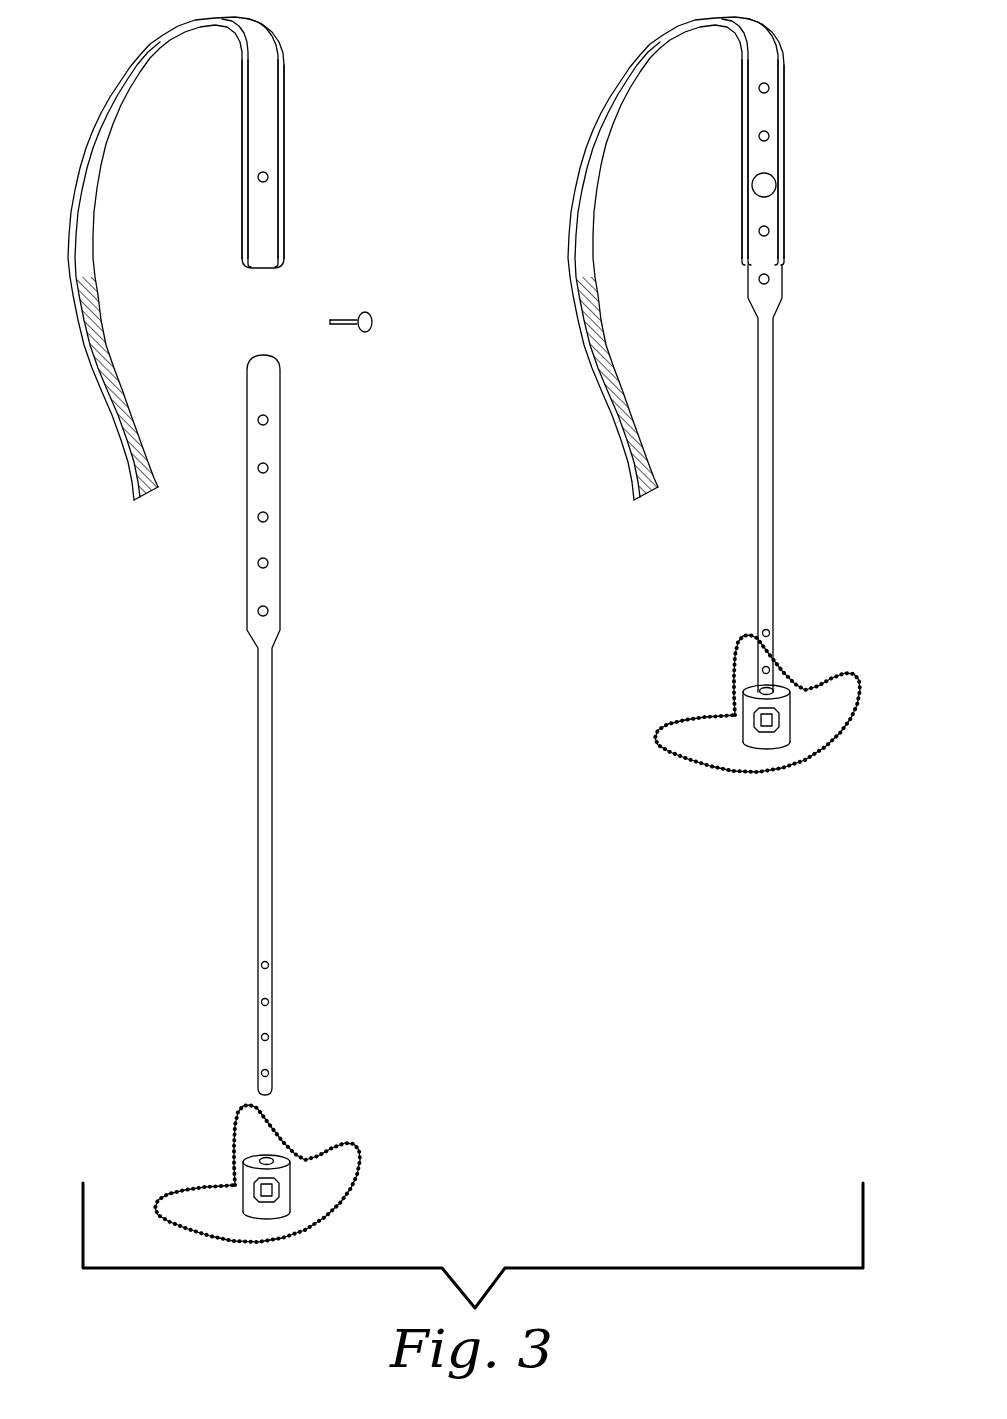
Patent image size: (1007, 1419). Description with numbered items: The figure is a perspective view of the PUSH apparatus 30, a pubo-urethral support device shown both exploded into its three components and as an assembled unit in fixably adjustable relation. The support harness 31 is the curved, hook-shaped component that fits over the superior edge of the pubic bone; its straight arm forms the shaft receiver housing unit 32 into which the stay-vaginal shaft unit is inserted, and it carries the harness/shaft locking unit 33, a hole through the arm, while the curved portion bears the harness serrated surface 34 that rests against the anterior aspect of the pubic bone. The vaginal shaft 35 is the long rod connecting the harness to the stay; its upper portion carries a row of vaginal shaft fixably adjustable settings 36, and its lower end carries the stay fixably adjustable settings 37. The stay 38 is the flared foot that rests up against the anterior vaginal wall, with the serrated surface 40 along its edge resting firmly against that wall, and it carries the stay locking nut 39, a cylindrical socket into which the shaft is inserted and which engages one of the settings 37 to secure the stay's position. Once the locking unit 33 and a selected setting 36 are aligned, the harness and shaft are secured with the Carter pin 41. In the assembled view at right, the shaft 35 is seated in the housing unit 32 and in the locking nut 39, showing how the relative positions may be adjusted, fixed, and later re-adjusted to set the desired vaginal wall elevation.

The PUSH apparatus 30 is at (773, 383).
The support harness 31 is at (285, 148).
The shaft receiver housing unit 32 is at (263, 260).
The harness/shaft locking unit 33 is at (268, 184).
The harness serrated surface 34 is at (130, 377).
The vaginal shaft 35 is at (273, 757).
The vaginal shaft fixably adjustable setting 36 is at (270, 517).
The stay fixably adjustable settings 37 is at (270, 1037).
The stay 38 is at (312, 1192).
The stay locking nut 39 is at (262, 1204).
The serrated surface 40 is at (355, 1187).
The Carter pin 41 is at (370, 332).